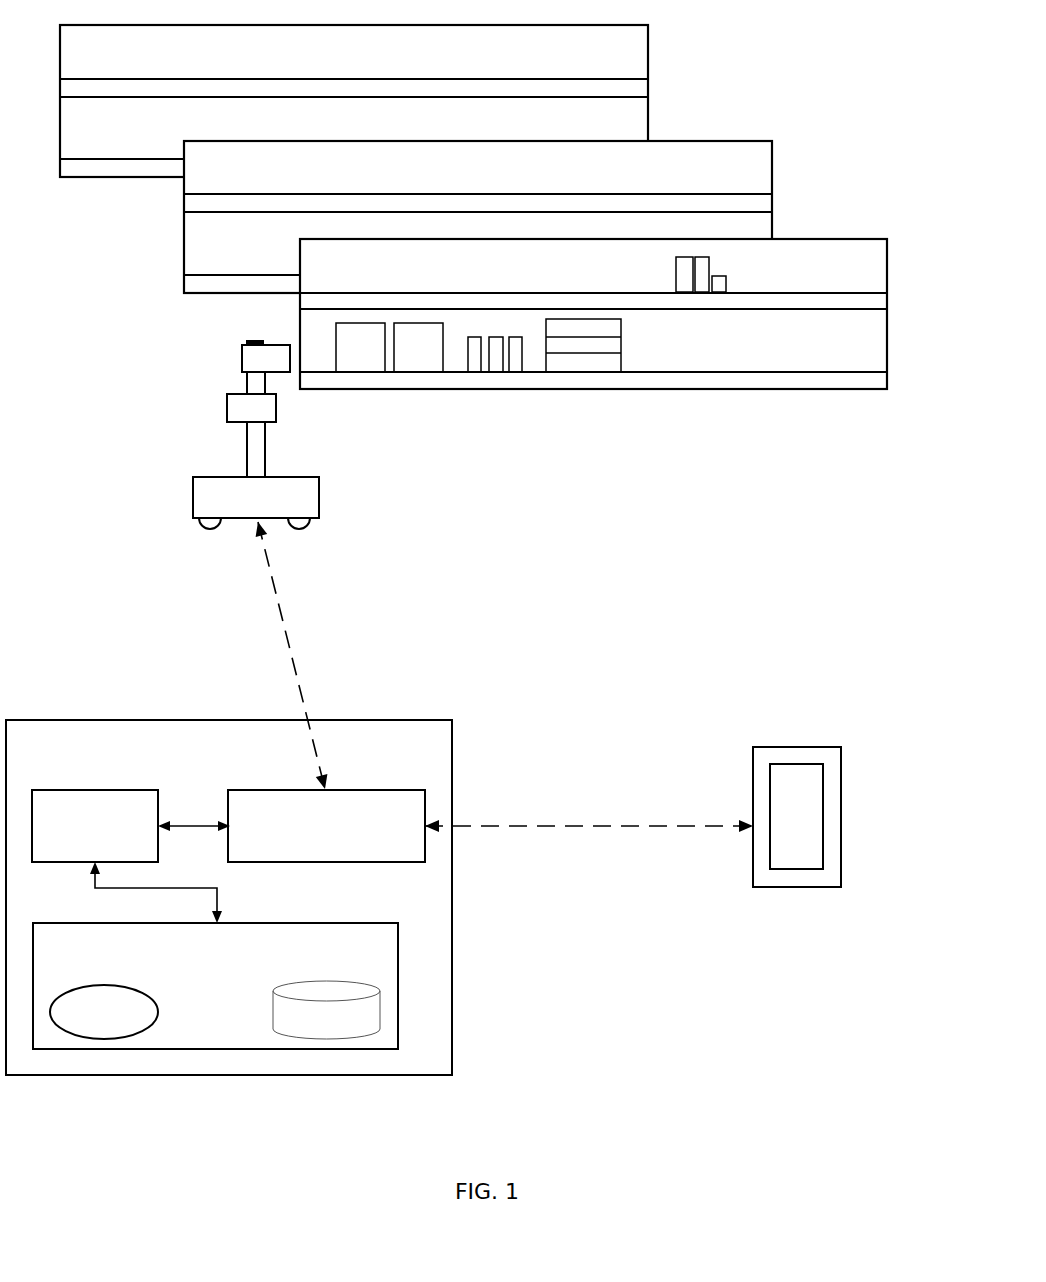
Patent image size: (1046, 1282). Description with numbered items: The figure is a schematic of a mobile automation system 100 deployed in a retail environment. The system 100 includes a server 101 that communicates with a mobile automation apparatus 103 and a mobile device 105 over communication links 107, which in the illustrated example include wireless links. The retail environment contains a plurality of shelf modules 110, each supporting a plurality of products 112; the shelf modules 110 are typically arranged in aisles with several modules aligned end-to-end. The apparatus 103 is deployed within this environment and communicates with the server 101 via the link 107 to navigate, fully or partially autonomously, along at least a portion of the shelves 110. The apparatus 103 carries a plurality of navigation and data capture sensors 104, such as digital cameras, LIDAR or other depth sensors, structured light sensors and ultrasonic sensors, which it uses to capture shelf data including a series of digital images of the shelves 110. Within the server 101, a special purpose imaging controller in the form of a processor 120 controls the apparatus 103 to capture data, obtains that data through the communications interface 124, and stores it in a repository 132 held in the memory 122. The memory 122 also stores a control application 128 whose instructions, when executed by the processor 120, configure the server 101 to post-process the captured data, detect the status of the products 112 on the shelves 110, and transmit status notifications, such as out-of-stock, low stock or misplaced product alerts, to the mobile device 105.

The mobile automation system 100 is at (793, 535).
The server 101 is at (256, 897).
The mobile automation apparatus 103 is at (324, 482).
The navigation and data capture sensors 104 is at (252, 362).
The mobile device 105 is at (836, 752).
The communication links 107 is at (504, 677).
The shelf modules 110 is at (648, 52).
The products 112 is at (621, 355).
The processor 120 is at (95, 826).
The memory 122 is at (269, 986).
The communications interface 124 is at (326, 826).
The control application 128 is at (104, 1012).
The repository 132 is at (380, 1013).